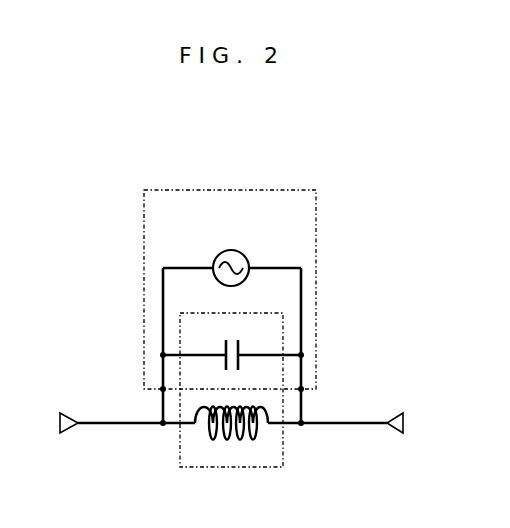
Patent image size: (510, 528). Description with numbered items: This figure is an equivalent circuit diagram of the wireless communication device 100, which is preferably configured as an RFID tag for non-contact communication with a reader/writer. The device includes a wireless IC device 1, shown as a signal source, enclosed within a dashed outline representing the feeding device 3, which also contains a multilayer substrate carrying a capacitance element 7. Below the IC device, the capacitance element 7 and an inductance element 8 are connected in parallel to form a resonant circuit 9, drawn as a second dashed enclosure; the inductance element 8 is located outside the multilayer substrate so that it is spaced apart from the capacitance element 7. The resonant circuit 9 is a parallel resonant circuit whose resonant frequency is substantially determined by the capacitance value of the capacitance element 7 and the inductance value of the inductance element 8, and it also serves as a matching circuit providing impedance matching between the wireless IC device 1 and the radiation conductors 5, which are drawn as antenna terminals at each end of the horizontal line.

The wireless communication device 100 is at (53, 127).
The wireless IC device 1 is at (231, 249).
The feeding device 3 is at (301, 190).
The radiation conductor 5 is at (65, 436).
The capacitance element 7 is at (242, 352).
The inductance element 8 is at (212, 442).
The resonant circuit 9 is at (283, 468).